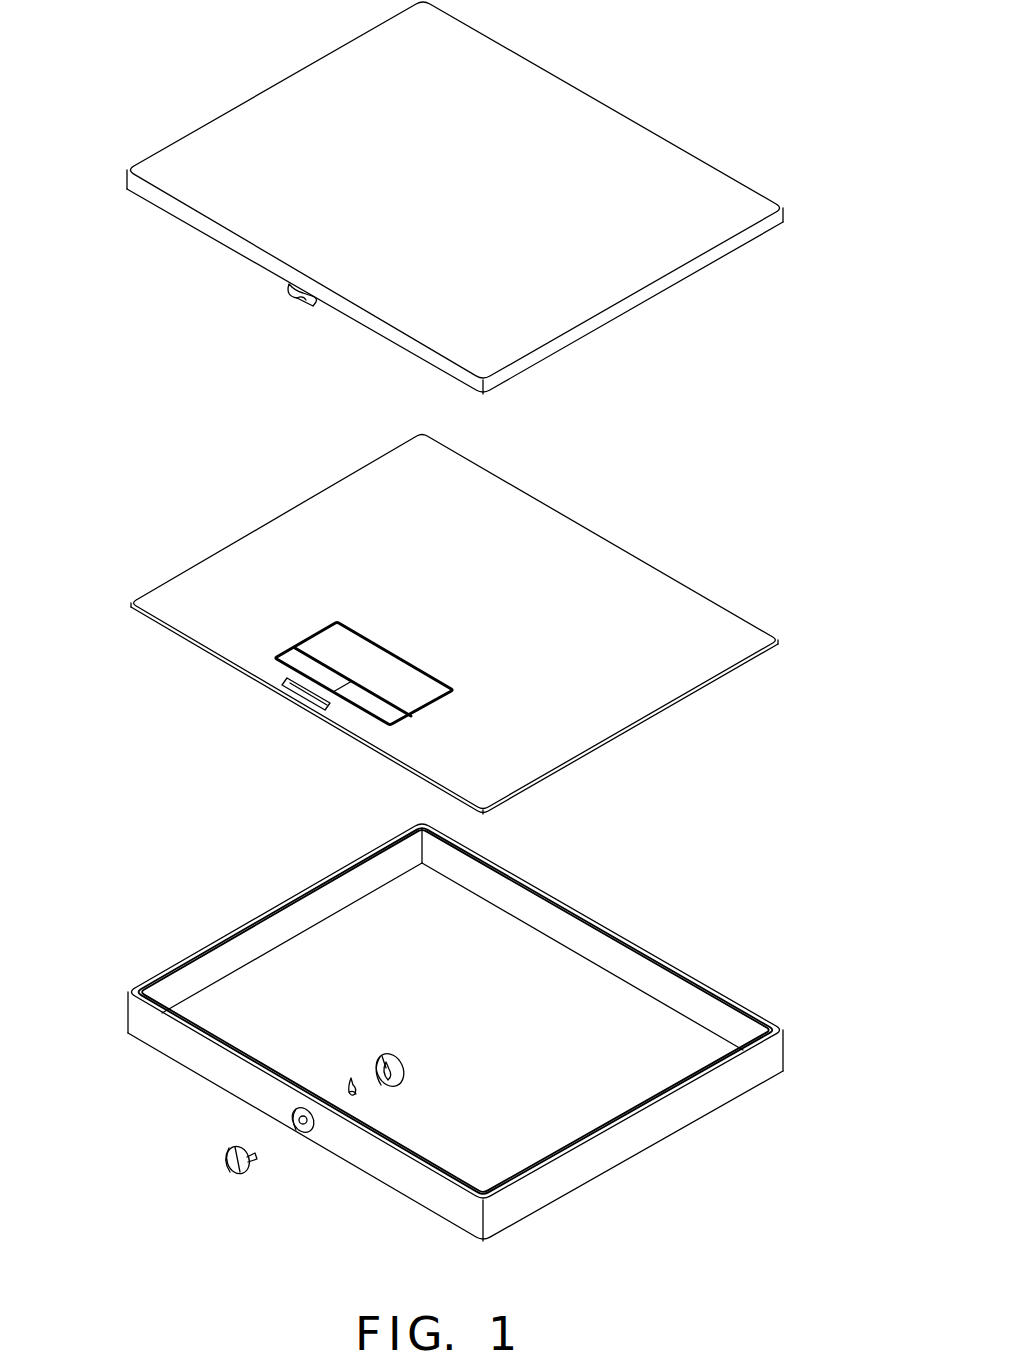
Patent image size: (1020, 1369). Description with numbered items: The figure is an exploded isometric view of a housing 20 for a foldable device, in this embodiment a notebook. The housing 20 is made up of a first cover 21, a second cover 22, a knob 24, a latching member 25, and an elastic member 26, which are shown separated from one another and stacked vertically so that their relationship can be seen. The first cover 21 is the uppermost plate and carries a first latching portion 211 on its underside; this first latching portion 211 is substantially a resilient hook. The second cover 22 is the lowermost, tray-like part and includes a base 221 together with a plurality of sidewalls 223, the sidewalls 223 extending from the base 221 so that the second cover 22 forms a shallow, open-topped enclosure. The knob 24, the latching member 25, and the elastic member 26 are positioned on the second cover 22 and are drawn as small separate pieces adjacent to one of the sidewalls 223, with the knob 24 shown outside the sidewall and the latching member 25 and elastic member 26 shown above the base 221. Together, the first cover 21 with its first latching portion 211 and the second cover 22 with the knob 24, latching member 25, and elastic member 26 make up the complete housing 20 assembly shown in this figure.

The housing 20 is at (562, 40).
The first cover 21 is at (667, 158).
The first latching portion 211 is at (298, 298).
The second cover 22 is at (722, 848).
The base 221 is at (538, 968).
The sidewalls 223 is at (622, 968).
The knob 24 is at (226, 1164).
The latching member 25 is at (372, 1063).
The elastic member 26 is at (360, 1097).